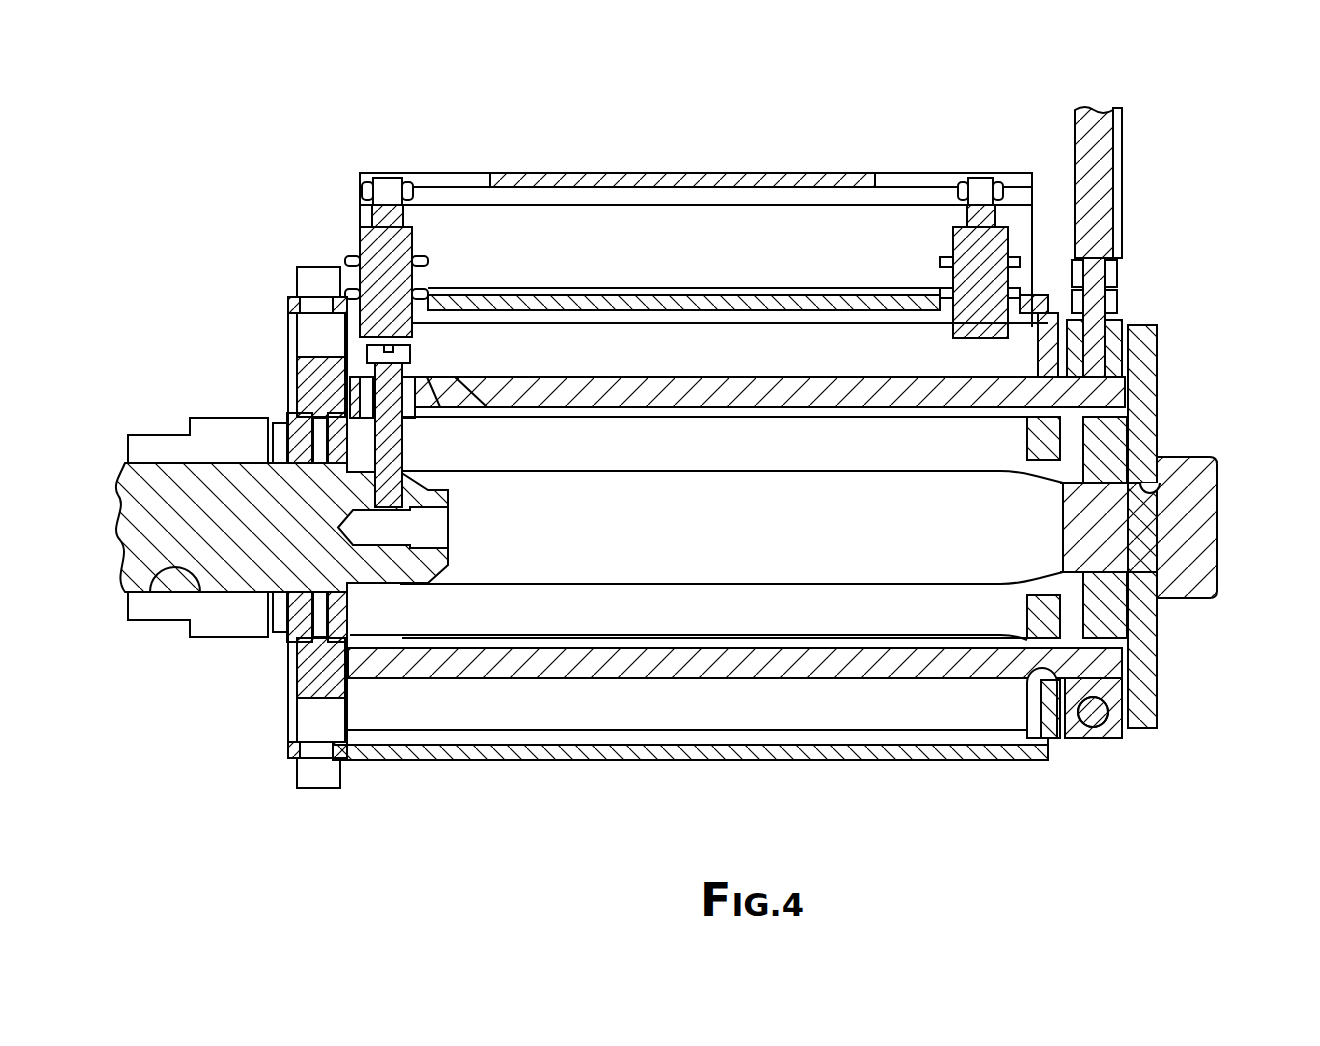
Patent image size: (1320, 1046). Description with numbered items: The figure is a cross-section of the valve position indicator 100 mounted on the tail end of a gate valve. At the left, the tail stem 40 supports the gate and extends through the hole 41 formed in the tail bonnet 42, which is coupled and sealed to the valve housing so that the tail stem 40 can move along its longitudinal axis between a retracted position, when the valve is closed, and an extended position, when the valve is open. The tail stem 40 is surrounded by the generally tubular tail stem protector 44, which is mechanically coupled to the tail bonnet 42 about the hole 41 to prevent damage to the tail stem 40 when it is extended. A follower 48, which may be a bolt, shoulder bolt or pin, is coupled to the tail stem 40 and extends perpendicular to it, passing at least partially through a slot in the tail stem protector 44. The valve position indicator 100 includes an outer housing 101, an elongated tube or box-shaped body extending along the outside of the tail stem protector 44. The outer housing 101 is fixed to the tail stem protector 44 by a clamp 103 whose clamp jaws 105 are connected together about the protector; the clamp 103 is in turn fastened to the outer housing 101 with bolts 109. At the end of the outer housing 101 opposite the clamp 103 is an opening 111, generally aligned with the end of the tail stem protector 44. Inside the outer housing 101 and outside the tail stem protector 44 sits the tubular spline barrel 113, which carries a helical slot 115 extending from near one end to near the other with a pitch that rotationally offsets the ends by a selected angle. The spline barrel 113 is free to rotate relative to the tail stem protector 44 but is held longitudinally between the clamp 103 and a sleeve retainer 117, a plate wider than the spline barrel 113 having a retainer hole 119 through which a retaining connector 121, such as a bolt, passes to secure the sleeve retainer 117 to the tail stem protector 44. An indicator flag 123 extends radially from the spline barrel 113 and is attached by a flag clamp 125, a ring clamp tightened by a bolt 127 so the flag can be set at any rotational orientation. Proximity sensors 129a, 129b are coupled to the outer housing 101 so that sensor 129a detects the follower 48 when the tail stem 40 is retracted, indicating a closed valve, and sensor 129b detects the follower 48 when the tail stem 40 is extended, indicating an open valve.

The valve position indicator 100 is at (445, 95).
The outer housing 101 is at (787, 172).
The clamp 103 is at (358, 835).
The clamp jaws 105 is at (293, 373).
The bolts 109 is at (310, 267).
The opening 111 is at (1037, 682).
The spline barrel 113 is at (795, 678).
The helical slot 115 is at (442, 387).
The sleeve retainer 117 is at (1160, 688).
The retainer hole 119 is at (1145, 490).
The retaining connector 121 is at (1205, 525).
The indicator flag 123 is at (1122, 168).
The flag clamp 125 is at (1085, 738).
The bolt 127 is at (1100, 713).
The proximity sensor 129a is at (386, 172).
The proximity sensor 129b is at (983, 175).
The tail stem 40 is at (222, 594).
The hole 41 is at (152, 590).
The tail bonnet 42 is at (237, 418).
The tail stem protector 44 is at (535, 617).
The follower 48 is at (367, 353).